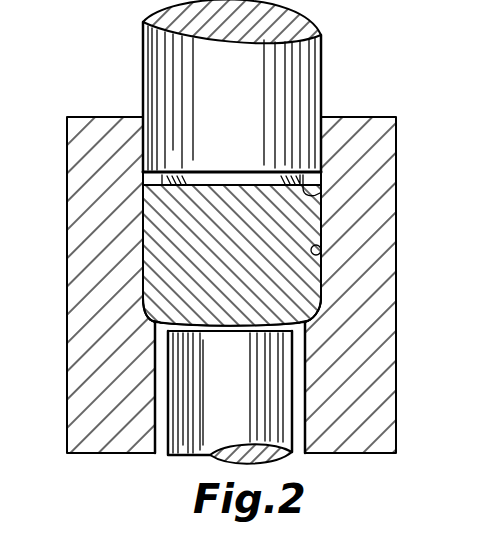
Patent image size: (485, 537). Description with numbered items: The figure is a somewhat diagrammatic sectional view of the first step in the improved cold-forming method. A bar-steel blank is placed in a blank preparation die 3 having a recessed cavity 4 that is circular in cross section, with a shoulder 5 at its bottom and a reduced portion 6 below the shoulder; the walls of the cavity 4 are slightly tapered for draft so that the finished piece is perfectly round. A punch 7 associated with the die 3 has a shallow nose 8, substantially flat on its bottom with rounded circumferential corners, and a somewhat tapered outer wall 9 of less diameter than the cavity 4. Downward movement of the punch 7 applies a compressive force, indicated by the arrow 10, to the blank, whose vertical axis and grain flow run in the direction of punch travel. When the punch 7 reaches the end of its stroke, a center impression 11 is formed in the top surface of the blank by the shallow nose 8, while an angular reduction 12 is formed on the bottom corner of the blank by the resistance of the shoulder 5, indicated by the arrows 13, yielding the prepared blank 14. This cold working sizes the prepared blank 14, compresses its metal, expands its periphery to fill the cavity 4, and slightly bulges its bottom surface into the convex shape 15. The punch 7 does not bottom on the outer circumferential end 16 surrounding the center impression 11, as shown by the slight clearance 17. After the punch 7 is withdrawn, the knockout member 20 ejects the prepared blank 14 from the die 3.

The blank preparation die 3 is at (385, 227).
The recessed cavity 4 is at (321, 254).
The shoulder 5 is at (314, 318).
The reduced portion 6 is at (309, 390).
The punch 7 is at (309, 70).
The shallow nose 8 is at (232, 175).
The tapered outer wall 9 is at (292, 176).
The arrow indicating compressive force 10 is at (233, 160).
The center impression 11 is at (215, 188).
The angular reduction 12 is at (145, 305).
The arrows indicating shoulder force 13 is at (143, 314).
The prepared blank 14 is at (197, 257).
The convex shape 15 is at (236, 323).
The outer circumferential end 16 is at (325, 192).
The clearance 17 is at (143, 172).
The knockout member 20 is at (197, 398).